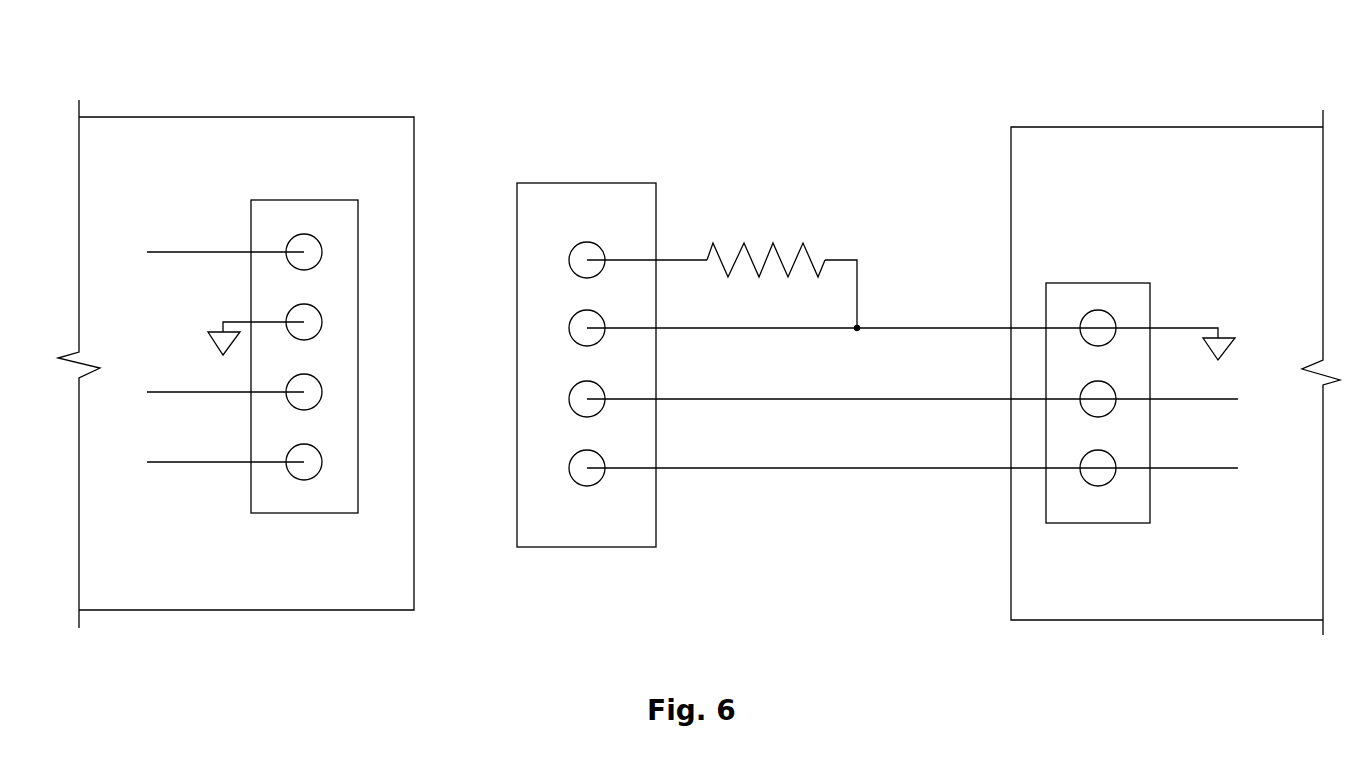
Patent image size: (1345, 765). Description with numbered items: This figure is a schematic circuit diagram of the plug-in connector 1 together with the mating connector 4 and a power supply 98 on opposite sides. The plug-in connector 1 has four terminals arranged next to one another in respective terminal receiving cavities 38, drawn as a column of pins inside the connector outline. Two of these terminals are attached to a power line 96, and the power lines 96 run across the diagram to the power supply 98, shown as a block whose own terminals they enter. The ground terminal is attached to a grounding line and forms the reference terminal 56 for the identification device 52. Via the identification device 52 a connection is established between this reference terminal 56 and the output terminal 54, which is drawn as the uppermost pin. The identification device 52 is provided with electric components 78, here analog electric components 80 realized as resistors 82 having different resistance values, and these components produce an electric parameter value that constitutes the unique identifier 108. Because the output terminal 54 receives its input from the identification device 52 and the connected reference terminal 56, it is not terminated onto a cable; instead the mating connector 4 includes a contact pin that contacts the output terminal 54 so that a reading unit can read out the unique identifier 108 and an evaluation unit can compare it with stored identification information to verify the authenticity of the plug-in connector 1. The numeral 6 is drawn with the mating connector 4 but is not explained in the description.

The plug-in connector 1 is at (694, 46).
The mating connector 4 is at (236, 326).
The second device 6 is at (214, 90).
The terminal receiving cavities 38 is at (575, 332).
The identification device 52 is at (788, 228).
The output terminal 54 is at (585, 253).
The reference terminal 56 is at (516, 353).
The electric components 78 is at (788, 229).
The analog electric components 80 is at (788, 229).
The resistors 82 is at (822, 205).
The power line 96 is at (818, 468).
The power supply 98 is at (1082, 597).
The unique identifier 108 is at (623, 257).